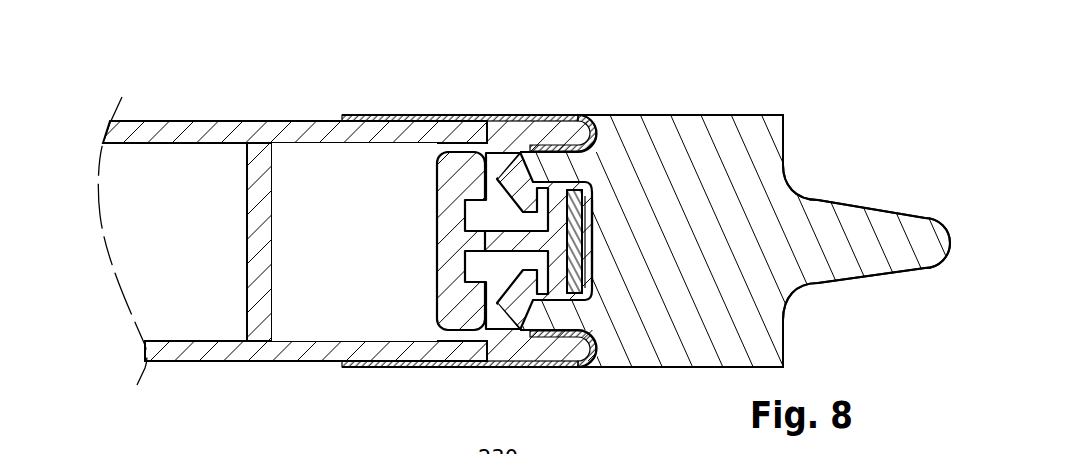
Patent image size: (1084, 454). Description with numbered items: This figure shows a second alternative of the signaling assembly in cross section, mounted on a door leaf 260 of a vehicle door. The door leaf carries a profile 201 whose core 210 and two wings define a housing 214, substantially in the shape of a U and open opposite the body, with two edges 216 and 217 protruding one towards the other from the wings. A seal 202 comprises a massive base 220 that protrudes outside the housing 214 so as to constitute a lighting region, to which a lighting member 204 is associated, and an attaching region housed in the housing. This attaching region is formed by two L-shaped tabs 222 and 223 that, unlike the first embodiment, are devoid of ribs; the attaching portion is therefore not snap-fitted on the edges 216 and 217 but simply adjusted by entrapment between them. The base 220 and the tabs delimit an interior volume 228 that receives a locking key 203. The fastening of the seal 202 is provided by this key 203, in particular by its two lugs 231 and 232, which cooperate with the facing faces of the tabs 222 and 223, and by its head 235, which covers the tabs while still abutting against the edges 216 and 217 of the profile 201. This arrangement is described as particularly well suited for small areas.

The profile 201 is at (213, 383).
The seal 202 is at (838, 157).
The locking key 203 is at (441, 312).
The lighting member 204 is at (578, 223).
The core of profile 210 is at (259, 240).
The housing of profile 214 is at (313, 198).
The edge of profile 216 is at (497, 177).
The edge of profile 217 is at (486, 292).
The base of seal 220 is at (700, 241).
The tab of seal 222 is at (478, 215).
The tab of seal 223 is at (478, 267).
The interior volume of seal 228 is at (588, 294).
The lug of key foot 231 is at (543, 190).
The lug of key foot 232 is at (552, 292).
The head of key 235 is at (452, 204).
The door leaf 260 is at (232, 100).